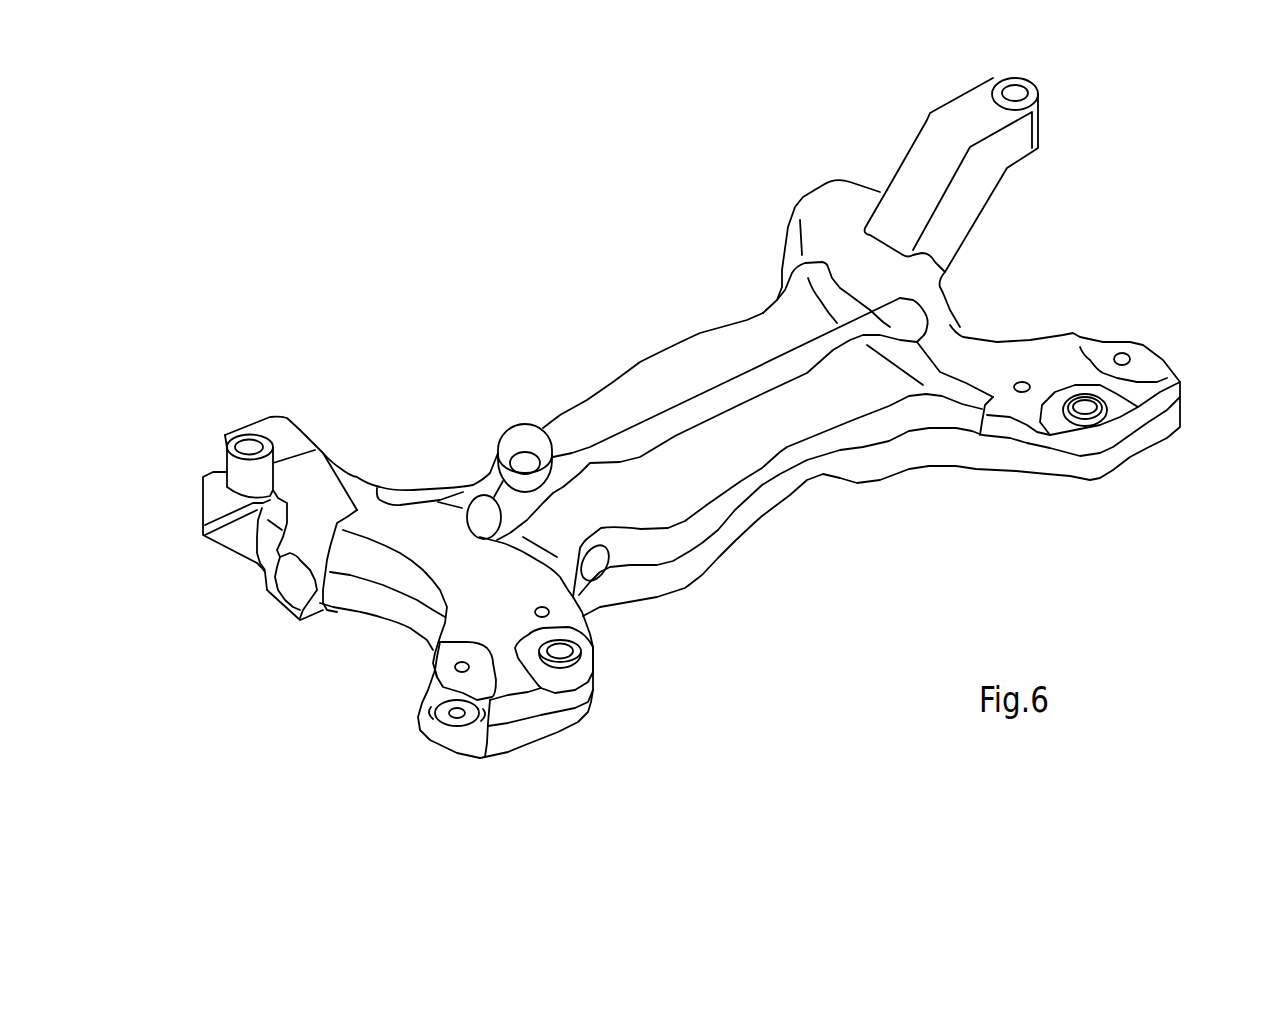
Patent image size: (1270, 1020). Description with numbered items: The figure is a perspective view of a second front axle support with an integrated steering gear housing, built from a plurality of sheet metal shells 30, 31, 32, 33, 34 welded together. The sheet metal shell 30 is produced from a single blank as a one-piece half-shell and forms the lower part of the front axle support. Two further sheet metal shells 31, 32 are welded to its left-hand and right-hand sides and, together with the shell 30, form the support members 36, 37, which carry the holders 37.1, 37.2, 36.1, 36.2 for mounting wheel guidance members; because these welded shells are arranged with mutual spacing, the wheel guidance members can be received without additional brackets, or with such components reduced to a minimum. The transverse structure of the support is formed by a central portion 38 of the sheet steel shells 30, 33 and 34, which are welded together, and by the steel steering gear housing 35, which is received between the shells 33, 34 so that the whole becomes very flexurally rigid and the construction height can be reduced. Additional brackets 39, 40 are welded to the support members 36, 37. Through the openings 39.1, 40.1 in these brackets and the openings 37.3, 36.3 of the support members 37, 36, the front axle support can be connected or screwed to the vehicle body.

The sheet metal shell 30 is at (937, 450).
The sheet metal shell 31 is at (395, 520).
The sheet metal shell 32 is at (1043, 357).
The sheet steel shell 33 is at (757, 447).
The sheet steel shell 34 is at (680, 368).
The steering gear housing 35 is at (910, 320).
The support member 36 is at (1103, 557).
The holder 36.1 is at (1220, 303).
The holder 36.2 is at (883, 117).
The opening 36.3 is at (1063, 417).
The support member 37 is at (565, 803).
The holder 37.1 is at (393, 792).
The holder 37.2 is at (190, 617).
The opening 37.3 is at (563, 650).
The central portion 38 is at (563, 308).
The bracket 39 is at (287, 440).
The opening 39.1 is at (245, 443).
The bracket 40 is at (967, 200).
The opening 40.1 is at (1018, 90).